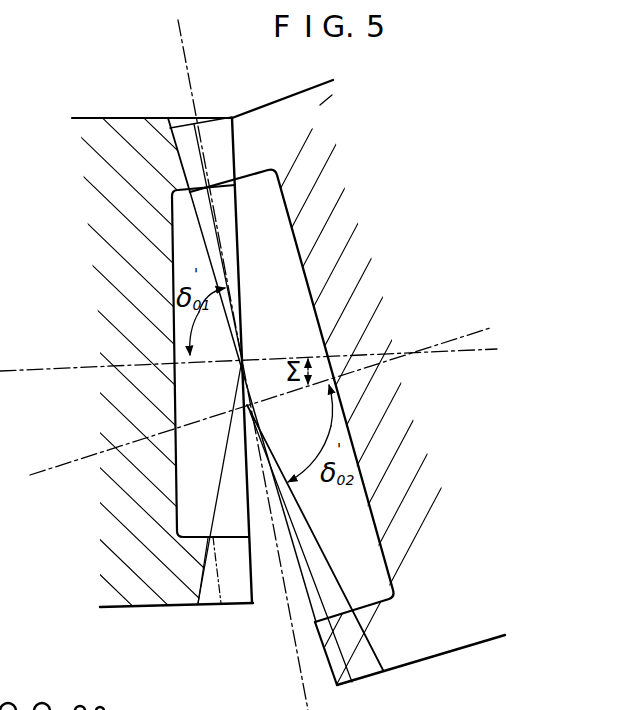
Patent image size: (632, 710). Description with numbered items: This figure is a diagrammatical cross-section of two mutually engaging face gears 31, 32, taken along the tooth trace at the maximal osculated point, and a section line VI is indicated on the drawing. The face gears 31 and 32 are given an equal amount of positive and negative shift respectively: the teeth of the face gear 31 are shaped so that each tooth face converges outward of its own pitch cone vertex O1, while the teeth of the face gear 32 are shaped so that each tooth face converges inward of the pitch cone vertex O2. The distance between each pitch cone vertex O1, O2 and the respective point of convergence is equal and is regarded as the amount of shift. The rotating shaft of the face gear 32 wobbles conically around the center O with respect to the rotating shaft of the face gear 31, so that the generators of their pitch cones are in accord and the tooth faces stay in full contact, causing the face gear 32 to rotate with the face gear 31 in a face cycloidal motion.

The face gear 31 is at (127, 258).
The face gear 32 is at (460, 539).
The section line VI is at (177, 32).
The center O is at (248, 401).
The pitch cone vertex O1 is at (243, 359).
The pitch cone vertex O2 is at (247, 405).